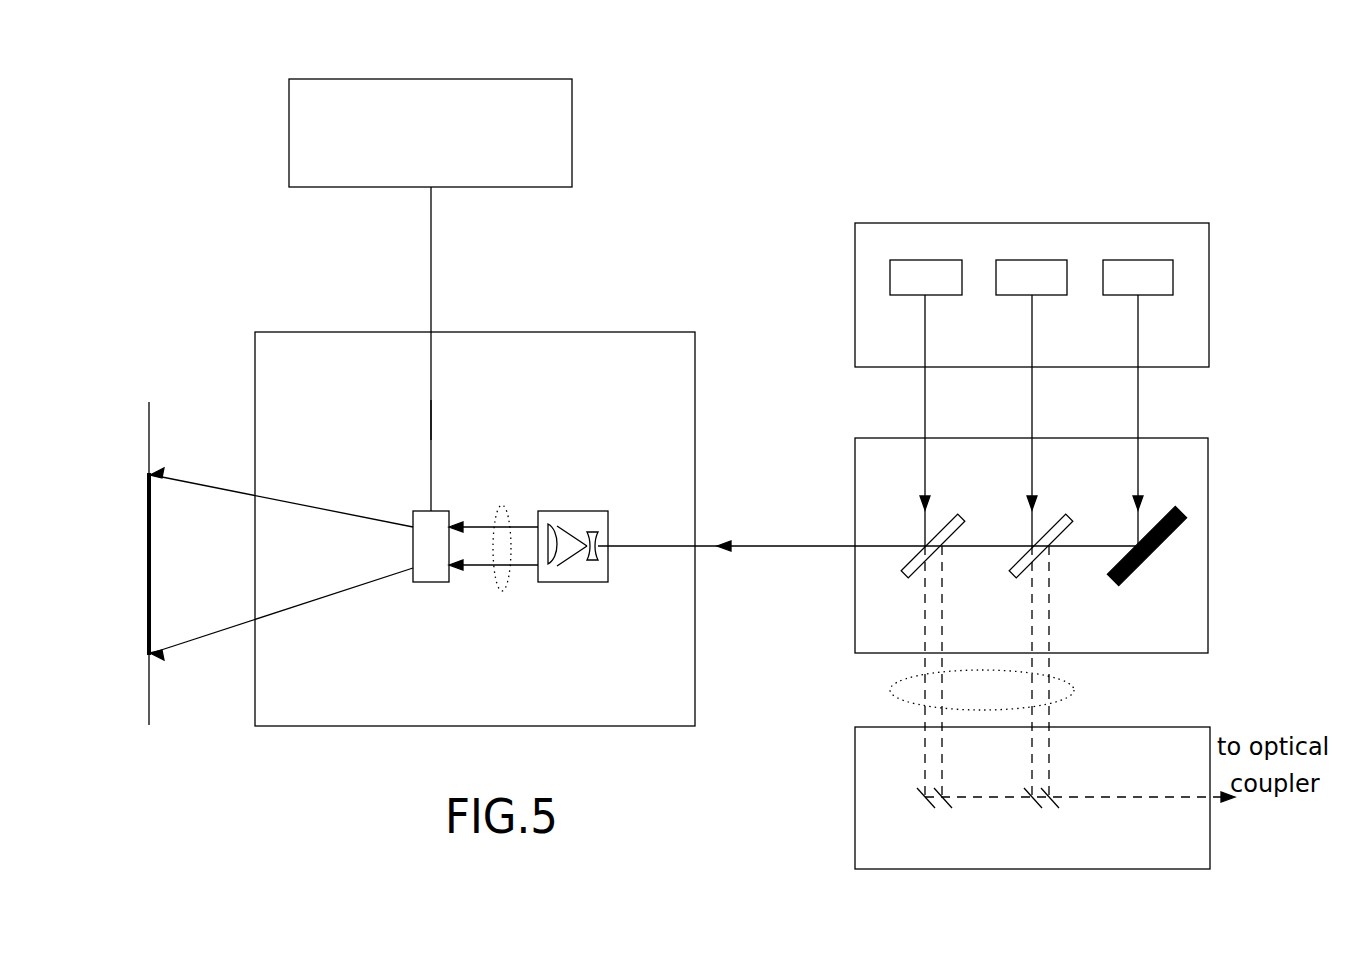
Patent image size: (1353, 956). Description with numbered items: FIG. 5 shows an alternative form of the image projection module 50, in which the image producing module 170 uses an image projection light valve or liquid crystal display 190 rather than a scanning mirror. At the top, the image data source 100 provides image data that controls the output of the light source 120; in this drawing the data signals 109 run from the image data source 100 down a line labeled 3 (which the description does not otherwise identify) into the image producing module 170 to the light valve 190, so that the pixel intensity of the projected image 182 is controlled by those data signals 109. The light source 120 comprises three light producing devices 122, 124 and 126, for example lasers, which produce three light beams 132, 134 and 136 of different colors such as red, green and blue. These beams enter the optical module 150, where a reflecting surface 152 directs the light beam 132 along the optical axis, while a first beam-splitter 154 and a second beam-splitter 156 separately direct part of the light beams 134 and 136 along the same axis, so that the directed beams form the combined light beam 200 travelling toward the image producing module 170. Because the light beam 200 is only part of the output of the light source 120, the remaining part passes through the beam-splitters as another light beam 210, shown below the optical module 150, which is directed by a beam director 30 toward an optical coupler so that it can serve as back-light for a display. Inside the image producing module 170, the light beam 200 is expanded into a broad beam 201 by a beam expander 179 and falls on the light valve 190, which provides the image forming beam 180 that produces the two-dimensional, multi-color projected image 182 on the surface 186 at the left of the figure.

The image projection module 50 is at (751, 182).
The image data source 100 is at (483, 79).
The data signals 109 is at (431, 297).
The image producing module 170 is at (325, 332).
The data signal line 3 is at (422, 430).
The image projection light valve or liquid crystal display 190 is at (422, 582).
The image forming beam 180 is at (323, 502).
The surface 186 is at (149, 432).
The projected image 182 is at (149, 545).
The broad beam 201 is at (502, 504).
The beam expander 179 is at (563, 511).
The light beam 200 is at (740, 544).
The light source 120 is at (855, 327).
The light producing device 126 is at (933, 295).
The light producing device 124 is at (1038, 295).
The light producing device 122 is at (1145, 295).
The light beam 136 is at (925, 428).
The light beam 134 is at (1032, 428).
The light beam 132 is at (1138, 428).
The optical module 150 is at (855, 475).
The second beam-splitter 156 is at (947, 518).
The first beam-splitter 154 is at (1053, 518).
The reflecting surface 152 is at (1158, 518).
The light beam 210 is at (897, 683).
The beam director 30 is at (855, 785).